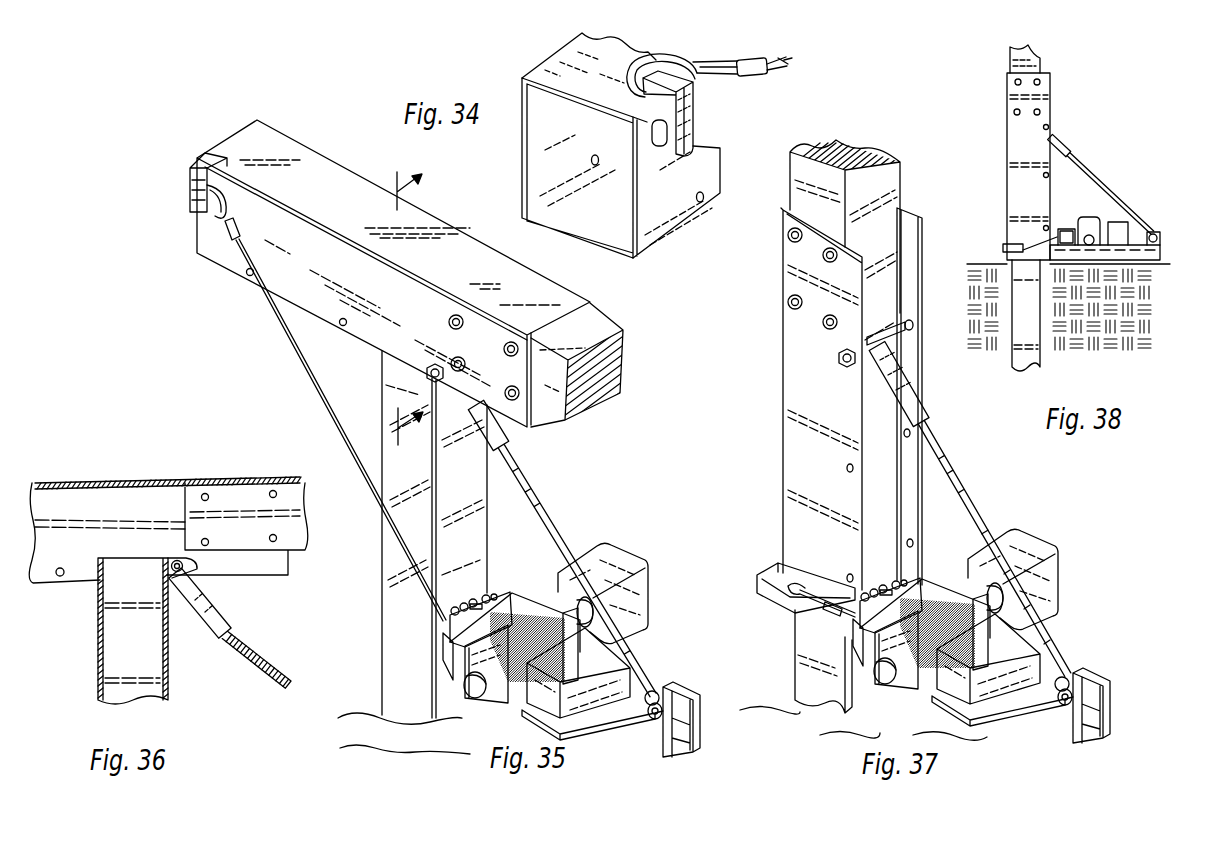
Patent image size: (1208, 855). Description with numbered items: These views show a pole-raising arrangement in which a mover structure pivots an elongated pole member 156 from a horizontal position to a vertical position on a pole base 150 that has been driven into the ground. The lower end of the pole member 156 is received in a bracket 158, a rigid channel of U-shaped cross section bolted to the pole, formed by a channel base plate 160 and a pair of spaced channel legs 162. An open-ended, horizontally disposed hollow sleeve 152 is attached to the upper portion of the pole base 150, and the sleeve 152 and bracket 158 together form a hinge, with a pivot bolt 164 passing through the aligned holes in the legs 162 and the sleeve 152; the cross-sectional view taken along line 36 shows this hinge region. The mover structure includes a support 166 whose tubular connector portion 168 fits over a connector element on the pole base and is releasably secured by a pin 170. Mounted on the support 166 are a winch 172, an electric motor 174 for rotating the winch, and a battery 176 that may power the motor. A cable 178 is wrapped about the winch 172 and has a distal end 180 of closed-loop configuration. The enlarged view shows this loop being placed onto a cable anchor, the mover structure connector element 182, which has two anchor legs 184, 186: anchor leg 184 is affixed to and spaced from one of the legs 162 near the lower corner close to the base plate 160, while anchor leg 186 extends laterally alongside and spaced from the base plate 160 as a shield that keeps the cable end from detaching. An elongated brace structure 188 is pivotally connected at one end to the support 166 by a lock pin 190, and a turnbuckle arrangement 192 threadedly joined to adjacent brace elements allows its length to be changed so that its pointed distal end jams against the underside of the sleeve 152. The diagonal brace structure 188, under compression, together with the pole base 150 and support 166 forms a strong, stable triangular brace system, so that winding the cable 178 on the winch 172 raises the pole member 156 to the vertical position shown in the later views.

In FIG. 35, the section line 36 is at (410, 300).
In FIG. 36, the pole base 150 is at (168, 648).
In FIG. 38, the pole base 150 is at (1023, 343).
In FIG. 36, the sleeve 152 is at (197, 569).
In FIG. 37, the sleeve 152 is at (910, 333).
In FIG. 38, the sleeve 152 is at (1030, 244).
In FIG. 35, the pole member 156 is at (620, 360).
In FIG. 36, the pole member 156 is at (232, 497).
In FIG. 37, the pole member 156 is at (868, 150).
In FIG. 38, the pole member 156 is at (1010, 60).
In FIG. 34, the bracket 158 is at (721, 153).
In FIG. 35, the bracket 158 is at (305, 172).
In FIG. 37, the bracket 158 is at (800, 452).
In FIG. 38, the bracket 158 is at (1020, 147).
In FIG. 34, the channel base plate 160 is at (556, 55).
In FIG. 35, the channel base plate 160 is at (508, 254).
In FIG. 34, the channel legs 162 is at (540, 172).
In FIG. 37, the channel legs 162 is at (916, 228).
In FIG. 37, the pivot bolt 164 is at (840, 360).
In FIG. 35, the support 166 is at (693, 700).
In FIG. 37, the support 166 is at (1115, 705).
In FIG. 38, the support 166 is at (1158, 250).
In FIG. 35, the tubular connector portion 168 is at (493, 592).
In FIG. 37, the tubular connector portion 168 is at (925, 634).
In FIG. 35, the pin 170 is at (458, 593).
In FIG. 37, the pin 170 is at (887, 622).
In FIG. 35, the winch 172 is at (502, 692).
In FIG. 37, the winch 172 is at (937, 657).
In FIG. 35, the electric motor 174 is at (606, 550).
In FIG. 37, the electric motor 174 is at (1037, 579).
In FIG. 35, the battery 176 is at (573, 728).
In FIG. 37, the battery 176 is at (1002, 678).
In FIG. 34, the cable 178 is at (790, 63).
In FIG. 35, the cable 178 is at (303, 368).
In FIG. 37, the cable 178 is at (855, 613).
In FIG. 34, the cable distal end 180 is at (670, 57).
In FIG. 35, the cable distal end 180 is at (195, 235).
In FIG. 34, the mover structure connector element 182 is at (660, 146).
In FIG. 35, the mover structure connector element 182 is at (190, 195).
In FIG. 34, the anchor leg 184 is at (690, 120).
In FIG. 34, the anchor leg 186 is at (697, 66).
In FIG. 35, the brace structure 188 is at (556, 515).
In FIG. 36, the brace structure 188 is at (215, 604).
In FIG. 37, the brace structure 188 is at (970, 490).
In FIG. 38, the brace structure 188 is at (1105, 190).
In FIG. 35, the lock pin 190 is at (655, 718).
In FIG. 37, the lock pin 190 is at (1075, 725).
In FIG. 36, the turnbuckle arrangement 192 is at (268, 693).
In FIG. 37, the turnbuckle arrangement 192 is at (993, 532).